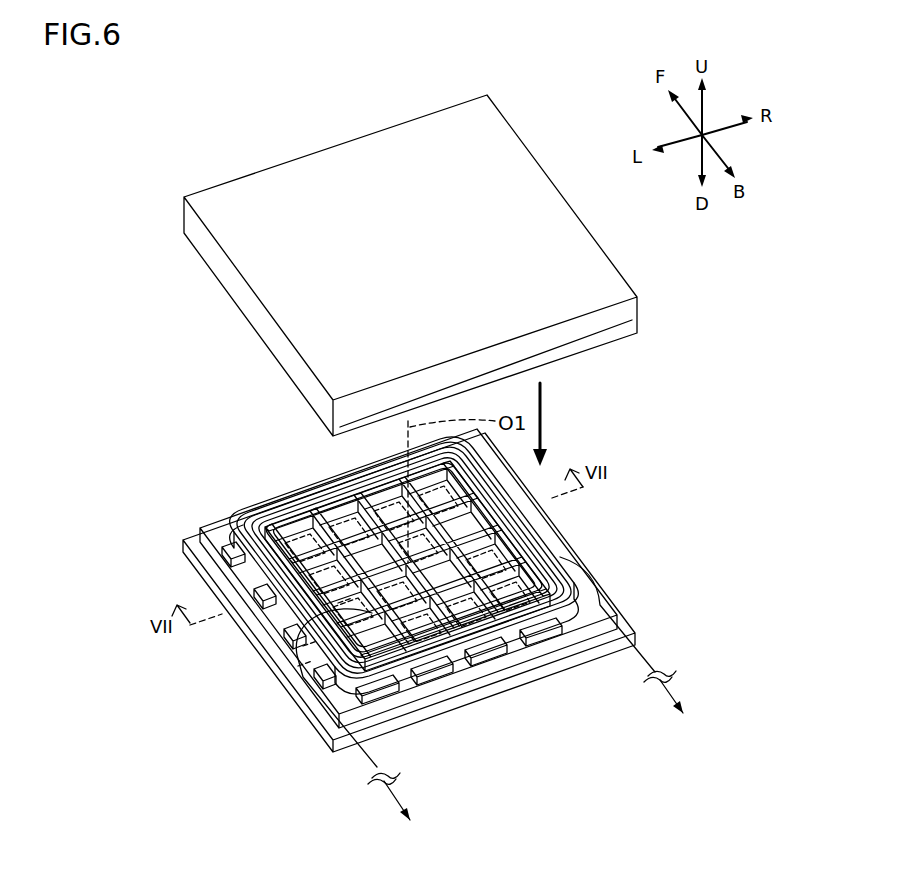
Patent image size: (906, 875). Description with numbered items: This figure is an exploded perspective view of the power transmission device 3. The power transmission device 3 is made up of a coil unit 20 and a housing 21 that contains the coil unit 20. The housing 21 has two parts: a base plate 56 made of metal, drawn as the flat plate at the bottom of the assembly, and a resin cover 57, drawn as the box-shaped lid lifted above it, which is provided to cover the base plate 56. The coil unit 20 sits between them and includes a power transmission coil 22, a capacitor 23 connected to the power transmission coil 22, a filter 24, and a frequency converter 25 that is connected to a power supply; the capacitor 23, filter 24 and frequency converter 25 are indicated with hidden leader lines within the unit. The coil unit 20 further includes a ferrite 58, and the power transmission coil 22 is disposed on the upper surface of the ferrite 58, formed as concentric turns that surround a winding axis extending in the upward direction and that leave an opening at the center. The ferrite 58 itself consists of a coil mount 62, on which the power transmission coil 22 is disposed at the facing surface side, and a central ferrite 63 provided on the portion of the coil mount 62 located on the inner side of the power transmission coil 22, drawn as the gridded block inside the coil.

The power transmission device 3 is at (332, 134).
The resin cover 57 is at (243, 331).
The housing 21 is at (124, 357).
The base plate 56 is at (198, 532).
The coil unit 20 is at (108, 550).
The power transmission coil 22 is at (280, 553).
The ferrite 58 is at (257, 590).
The central ferrite 63 is at (560, 558).
The coil mount 62 is at (585, 603).
The capacitor 23 is at (340, 605).
The frequency converter 25 is at (305, 648).
The filter 24 is at (300, 668).